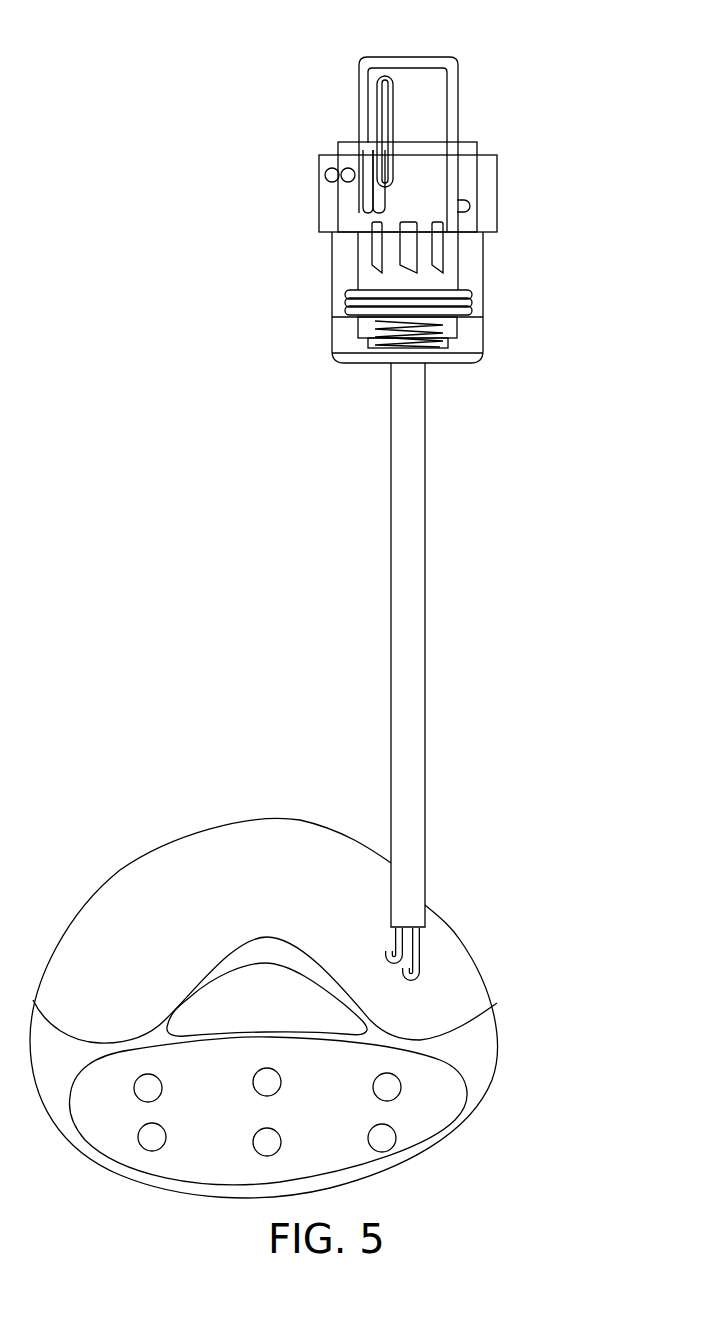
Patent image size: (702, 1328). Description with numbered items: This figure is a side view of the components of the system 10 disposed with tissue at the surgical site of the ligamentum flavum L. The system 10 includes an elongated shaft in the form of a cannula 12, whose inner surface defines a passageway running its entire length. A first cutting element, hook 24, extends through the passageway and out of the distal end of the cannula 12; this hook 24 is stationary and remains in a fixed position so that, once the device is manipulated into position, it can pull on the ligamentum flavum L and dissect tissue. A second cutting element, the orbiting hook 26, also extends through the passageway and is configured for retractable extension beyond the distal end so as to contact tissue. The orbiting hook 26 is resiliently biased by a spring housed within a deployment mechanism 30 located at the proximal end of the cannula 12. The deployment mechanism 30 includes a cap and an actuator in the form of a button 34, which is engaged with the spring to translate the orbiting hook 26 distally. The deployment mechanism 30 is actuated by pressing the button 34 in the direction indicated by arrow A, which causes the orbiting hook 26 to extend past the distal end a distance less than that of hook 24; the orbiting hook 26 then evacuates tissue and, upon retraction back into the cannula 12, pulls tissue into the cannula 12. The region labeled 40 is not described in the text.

The system 10 is at (292, 455).
The cannula 12 is at (426, 414).
The hook 24 is at (420, 968).
The orbiting hook 26 is at (393, 942).
The deployment mechanism 30 is at (277, 153).
The button 34 is at (443, 85).
The tongue 40 is at (285, 1010).
The arrow A is at (408, 45).
The ligamentum flavum L is at (510, 1078).